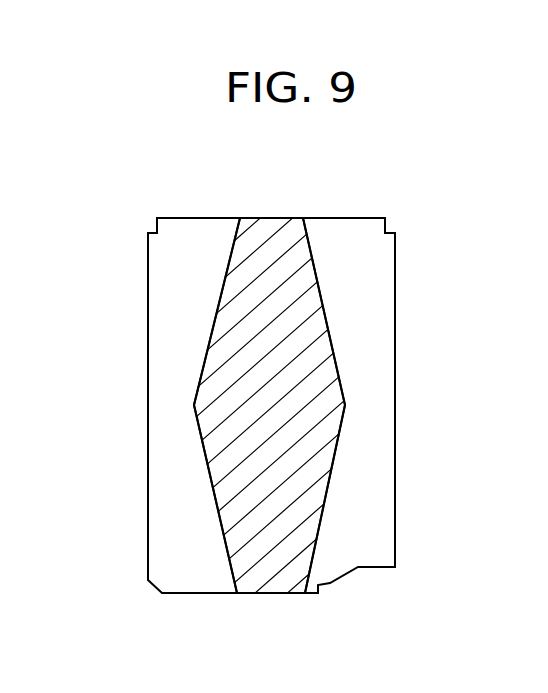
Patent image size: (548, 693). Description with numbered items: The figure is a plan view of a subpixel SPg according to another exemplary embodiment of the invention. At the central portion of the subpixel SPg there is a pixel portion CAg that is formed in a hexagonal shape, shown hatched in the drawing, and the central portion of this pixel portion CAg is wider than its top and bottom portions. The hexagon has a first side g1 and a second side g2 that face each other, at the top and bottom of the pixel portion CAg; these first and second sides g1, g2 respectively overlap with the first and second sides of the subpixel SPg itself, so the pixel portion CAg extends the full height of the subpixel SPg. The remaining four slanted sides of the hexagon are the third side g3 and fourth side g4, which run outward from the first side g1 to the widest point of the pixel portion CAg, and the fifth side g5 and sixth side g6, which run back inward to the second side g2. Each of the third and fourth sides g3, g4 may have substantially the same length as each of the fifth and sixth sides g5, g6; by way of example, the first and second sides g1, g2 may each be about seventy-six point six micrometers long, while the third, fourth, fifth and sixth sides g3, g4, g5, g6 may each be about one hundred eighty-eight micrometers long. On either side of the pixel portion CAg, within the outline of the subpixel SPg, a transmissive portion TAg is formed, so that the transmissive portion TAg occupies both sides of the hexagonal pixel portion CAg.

The subpixel SPg is at (140, 203).
The transmissive portion TAg is at (170, 439).
The pixel portion CAg is at (237, 384).
The first side g1 is at (270, 218).
The second side g2 is at (268, 593).
The third side g3 is at (225, 283).
The fourth side g4 is at (318, 279).
The fifth side g5 is at (224, 535).
The sixth side g6 is at (317, 533).